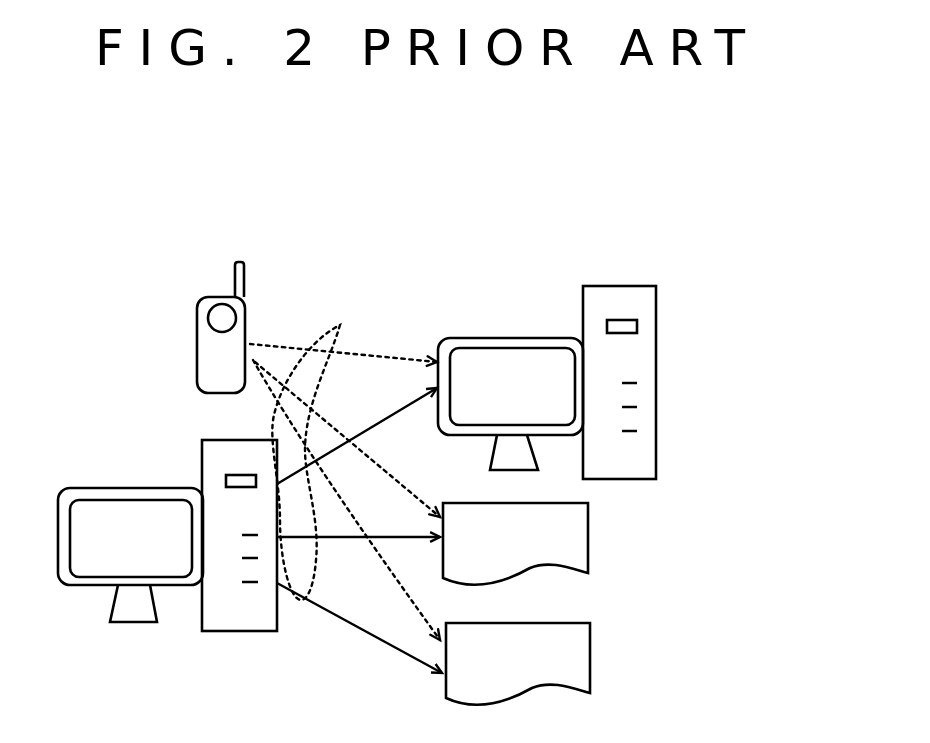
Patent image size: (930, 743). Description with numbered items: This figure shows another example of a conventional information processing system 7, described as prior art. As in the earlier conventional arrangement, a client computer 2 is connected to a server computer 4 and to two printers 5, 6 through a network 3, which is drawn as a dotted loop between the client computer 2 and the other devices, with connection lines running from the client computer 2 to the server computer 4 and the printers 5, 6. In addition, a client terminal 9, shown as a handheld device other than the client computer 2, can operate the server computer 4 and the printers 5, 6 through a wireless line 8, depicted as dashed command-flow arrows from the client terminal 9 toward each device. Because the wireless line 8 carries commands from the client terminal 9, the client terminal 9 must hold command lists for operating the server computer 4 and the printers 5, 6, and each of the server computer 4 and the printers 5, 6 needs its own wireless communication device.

The information processing system 7 is at (88, 243).
The client terminal 9 is at (197, 345).
The wireless line 8 is at (380, 332).
The network 3 is at (300, 603).
The client computer 2 is at (133, 623).
The server computer 4 is at (657, 405).
The printer 5 is at (588, 538).
The printer 6 is at (590, 658).